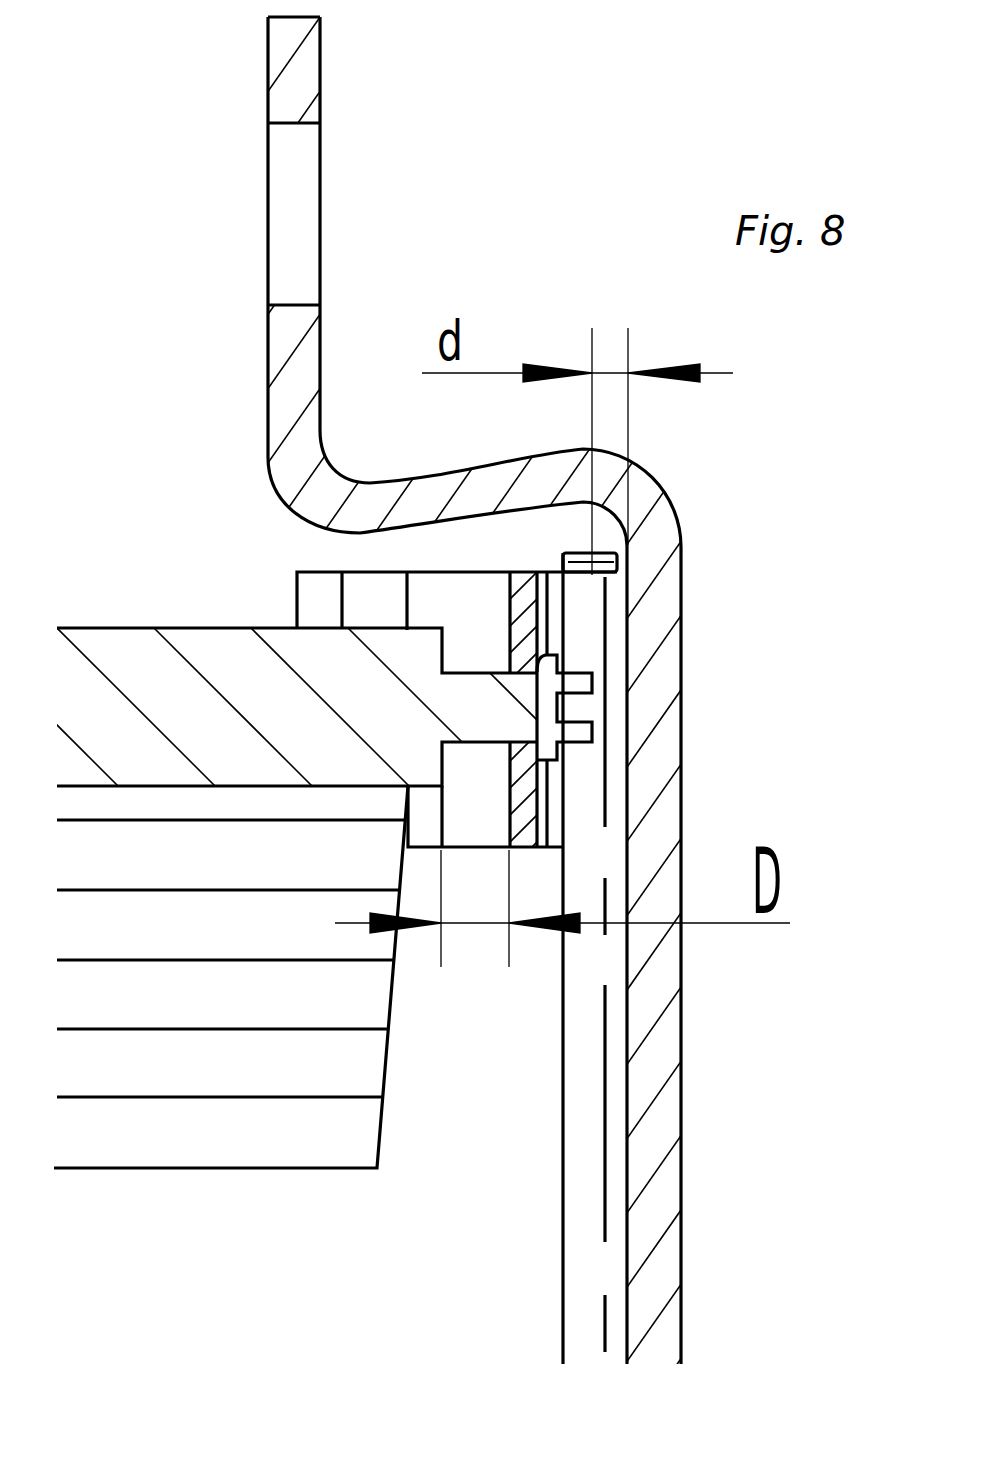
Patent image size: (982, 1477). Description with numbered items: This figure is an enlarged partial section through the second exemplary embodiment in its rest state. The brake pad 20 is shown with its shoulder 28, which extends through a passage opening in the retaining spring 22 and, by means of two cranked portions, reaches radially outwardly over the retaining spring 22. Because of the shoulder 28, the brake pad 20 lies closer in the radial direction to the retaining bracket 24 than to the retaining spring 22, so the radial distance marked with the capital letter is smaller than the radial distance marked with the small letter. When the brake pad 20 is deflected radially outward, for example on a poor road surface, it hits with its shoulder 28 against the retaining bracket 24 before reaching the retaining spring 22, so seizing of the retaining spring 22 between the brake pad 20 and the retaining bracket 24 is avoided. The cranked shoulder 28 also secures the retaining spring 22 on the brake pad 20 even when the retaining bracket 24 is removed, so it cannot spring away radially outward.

The brake pad 20 is at (217, 627).
The retaining spring 22 is at (537, 822).
The retaining bracket 24 is at (662, 484).
The shoulder 28 is at (570, 747).